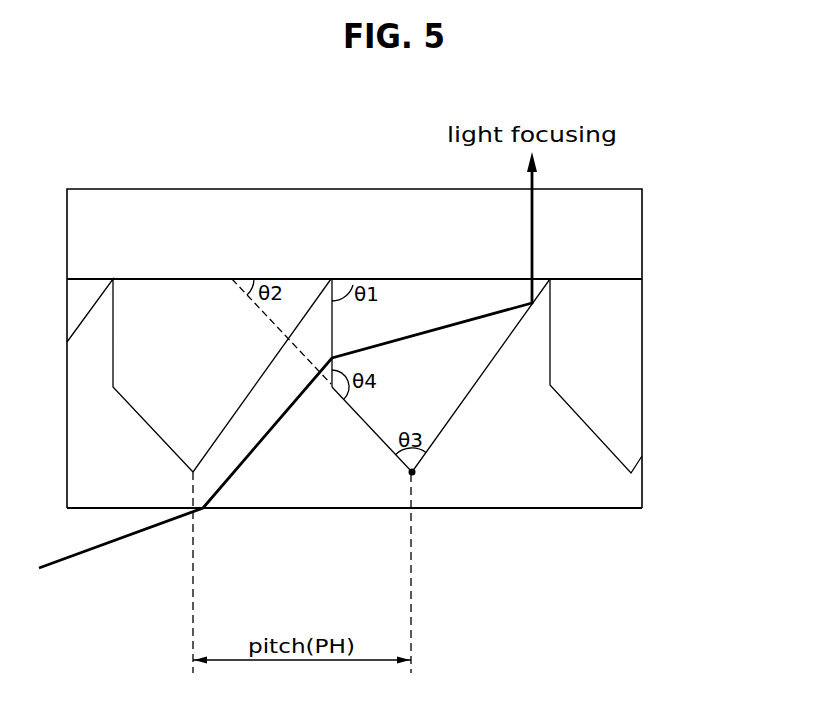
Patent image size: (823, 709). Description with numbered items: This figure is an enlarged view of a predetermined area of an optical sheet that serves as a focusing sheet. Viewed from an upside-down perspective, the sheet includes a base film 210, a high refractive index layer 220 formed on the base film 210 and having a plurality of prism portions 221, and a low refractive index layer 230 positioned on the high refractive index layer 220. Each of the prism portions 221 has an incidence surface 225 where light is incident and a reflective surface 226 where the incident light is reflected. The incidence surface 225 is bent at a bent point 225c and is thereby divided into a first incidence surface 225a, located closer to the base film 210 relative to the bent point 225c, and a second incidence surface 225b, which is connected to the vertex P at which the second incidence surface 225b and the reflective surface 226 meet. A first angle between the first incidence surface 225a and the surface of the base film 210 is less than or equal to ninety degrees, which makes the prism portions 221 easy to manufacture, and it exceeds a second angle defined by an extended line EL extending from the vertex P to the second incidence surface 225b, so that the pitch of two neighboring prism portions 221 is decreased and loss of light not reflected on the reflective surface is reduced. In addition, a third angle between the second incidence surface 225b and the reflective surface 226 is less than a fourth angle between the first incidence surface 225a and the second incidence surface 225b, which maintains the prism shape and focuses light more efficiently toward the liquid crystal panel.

The base film 210 is at (660, 235).
The high refractive index layer 220 is at (662, 368).
The prism portions 221 is at (635, 319).
The incidence surface 225 is at (302, 439).
The first incidence surface 225a is at (331, 333).
The second incidence surface 225b is at (368, 426).
The bent point 225c is at (330, 388).
The reflective surface 226 is at (452, 417).
The low refractive index layer 230 is at (658, 490).
The vertex P is at (413, 474).
The extended line EL is at (272, 319).